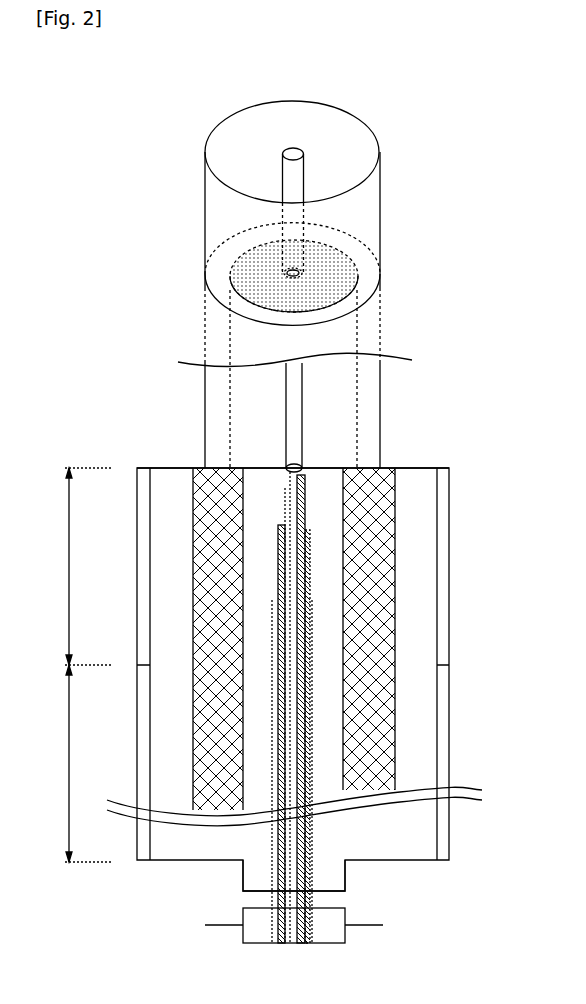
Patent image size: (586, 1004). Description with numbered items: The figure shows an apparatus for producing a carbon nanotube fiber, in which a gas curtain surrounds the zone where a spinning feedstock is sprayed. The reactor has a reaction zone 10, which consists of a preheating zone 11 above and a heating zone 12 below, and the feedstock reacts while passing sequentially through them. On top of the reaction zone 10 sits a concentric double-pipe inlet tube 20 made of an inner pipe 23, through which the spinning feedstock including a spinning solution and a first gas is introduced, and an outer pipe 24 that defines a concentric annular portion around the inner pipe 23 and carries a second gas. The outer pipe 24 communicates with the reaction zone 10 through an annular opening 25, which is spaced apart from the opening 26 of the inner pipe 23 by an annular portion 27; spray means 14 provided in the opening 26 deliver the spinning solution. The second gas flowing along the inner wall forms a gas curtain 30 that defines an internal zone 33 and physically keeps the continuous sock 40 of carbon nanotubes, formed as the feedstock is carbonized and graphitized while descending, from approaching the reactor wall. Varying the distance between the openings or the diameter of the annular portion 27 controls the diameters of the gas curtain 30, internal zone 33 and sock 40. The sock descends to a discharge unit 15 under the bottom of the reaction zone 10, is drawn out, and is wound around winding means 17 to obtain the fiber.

The reaction zone 10 is at (415, 555).
The preheating zone 11 is at (78, 566).
The heating zone 12 is at (78, 763).
The spray means 14 is at (393, 490).
The discharge unit 15 is at (347, 876).
The winding means 17 is at (347, 930).
The concentric double-pipe inlet tube 20 is at (177, 143).
The inner pipe 23 is at (305, 177).
The outer pipe 24 is at (248, 122).
The annular opening 25 is at (217, 287).
The opening of the inner pipe 26 is at (298, 272).
The annular portion 27 is at (258, 256).
The gas curtain 30 is at (382, 700).
The internal zone 33 is at (332, 612).
The continuous sock of carbon nanotubes 40 is at (312, 766).